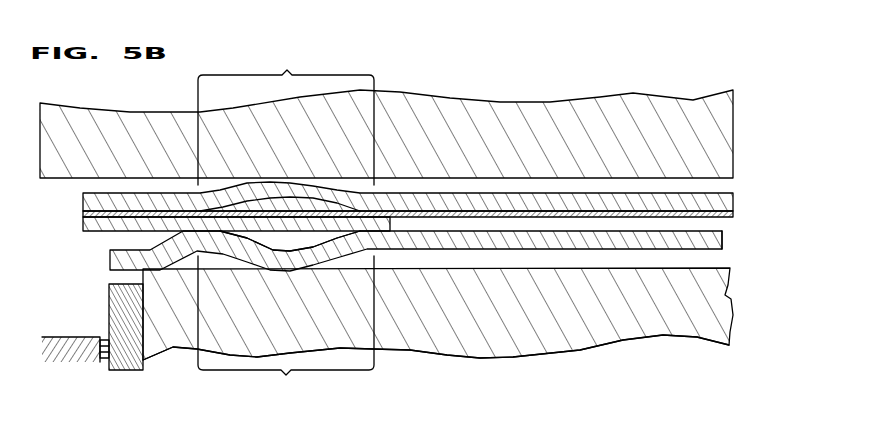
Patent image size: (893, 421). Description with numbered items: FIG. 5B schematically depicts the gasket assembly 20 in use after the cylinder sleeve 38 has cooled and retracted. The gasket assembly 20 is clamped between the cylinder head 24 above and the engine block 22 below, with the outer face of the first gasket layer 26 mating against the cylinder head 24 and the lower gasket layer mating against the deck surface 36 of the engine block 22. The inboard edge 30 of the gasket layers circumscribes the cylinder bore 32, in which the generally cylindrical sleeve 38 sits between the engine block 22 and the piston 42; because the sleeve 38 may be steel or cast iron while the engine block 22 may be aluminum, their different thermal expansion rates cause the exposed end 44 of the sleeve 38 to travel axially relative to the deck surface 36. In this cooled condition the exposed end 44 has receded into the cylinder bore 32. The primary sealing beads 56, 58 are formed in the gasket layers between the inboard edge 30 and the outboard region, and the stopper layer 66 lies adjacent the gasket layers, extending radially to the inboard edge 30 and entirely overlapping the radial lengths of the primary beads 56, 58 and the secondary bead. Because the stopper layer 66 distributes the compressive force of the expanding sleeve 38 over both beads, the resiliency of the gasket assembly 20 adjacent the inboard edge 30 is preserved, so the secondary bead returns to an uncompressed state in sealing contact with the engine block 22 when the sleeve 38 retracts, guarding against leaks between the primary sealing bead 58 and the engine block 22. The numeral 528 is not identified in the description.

The gasket assembly 20 is at (440, 150).
The engine block 22 is at (488, 323).
The cylinder head 24 is at (494, 150).
The first gasket layer 26 is at (527, 193).
The inboard edge 30 is at (97, 248).
The cylinder bore 32 is at (43, 203).
The deck surface 36 is at (710, 274).
The cylinder sleeve member 38 is at (126, 360).
The piston 42 is at (50, 337).
The exposed end 44 is at (123, 284).
The primary sealing bead 56 is at (286, 117).
The primary sealing bead 58 is at (286, 326).
The stopper layer 66 is at (390, 220).
The lower plate edge 528 is at (561, 240).